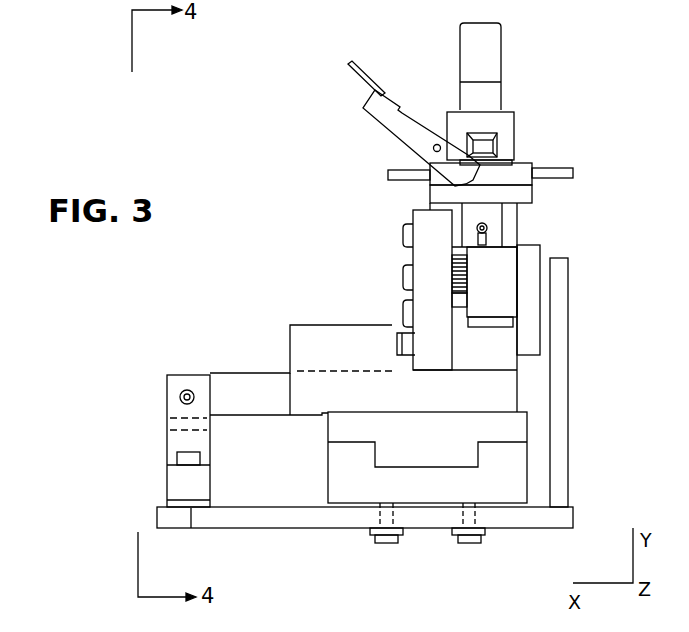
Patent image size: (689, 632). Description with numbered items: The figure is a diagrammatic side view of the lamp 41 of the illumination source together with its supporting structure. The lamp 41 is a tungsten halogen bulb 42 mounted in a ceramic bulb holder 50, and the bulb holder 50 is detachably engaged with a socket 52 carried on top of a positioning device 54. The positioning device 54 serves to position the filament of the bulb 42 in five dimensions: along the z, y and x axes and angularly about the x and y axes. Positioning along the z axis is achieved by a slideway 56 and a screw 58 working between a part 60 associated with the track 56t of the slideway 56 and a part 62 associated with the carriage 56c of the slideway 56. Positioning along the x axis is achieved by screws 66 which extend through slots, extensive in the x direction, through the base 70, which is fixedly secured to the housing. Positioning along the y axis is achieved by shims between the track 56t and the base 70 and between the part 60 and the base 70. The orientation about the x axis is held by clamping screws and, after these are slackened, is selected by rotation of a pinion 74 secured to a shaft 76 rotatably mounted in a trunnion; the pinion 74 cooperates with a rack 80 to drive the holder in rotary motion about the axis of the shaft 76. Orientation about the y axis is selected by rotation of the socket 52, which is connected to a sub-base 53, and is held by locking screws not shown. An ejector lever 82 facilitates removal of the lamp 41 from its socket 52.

The lamp 41 is at (532, 92).
The tungsten halogen bulb 42 is at (488, 58).
The ceramic bulb holder 50 is at (508, 135).
The socket 52 is at (515, 172).
The sub-base 53 is at (524, 197).
The positioning device 54 is at (294, 210).
The slideway 56 is at (318, 433).
The track of the slideway 56t is at (347, 452).
The carriage of the slideway 56c is at (384, 468).
The screw 58 is at (187, 390).
The part associated with the track 60 is at (168, 408).
The part associated with the carriage 62 is at (245, 387).
The screws 66 is at (410, 355).
The base 70 is at (235, 518).
The pinion 74 is at (450, 273).
The shaft 76 is at (403, 278).
The rack 80 is at (463, 305).
The ejector lever 82 is at (392, 98).